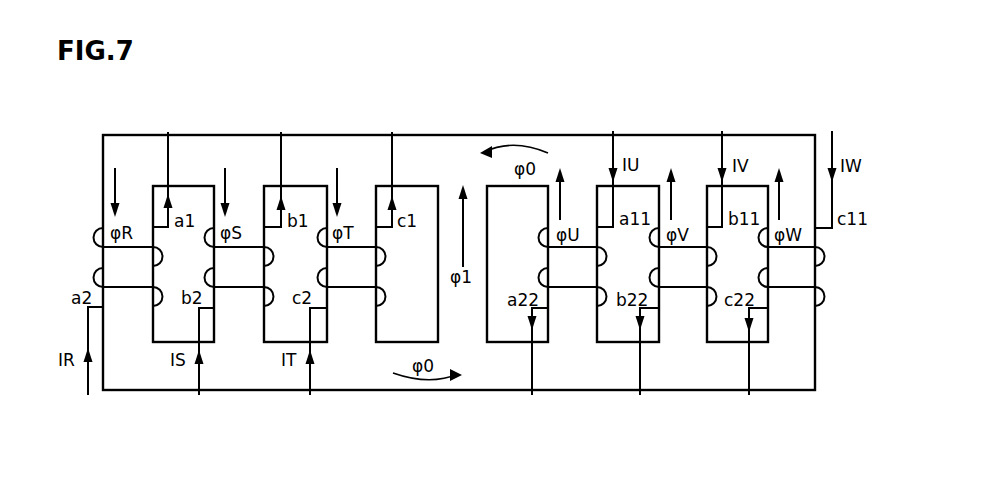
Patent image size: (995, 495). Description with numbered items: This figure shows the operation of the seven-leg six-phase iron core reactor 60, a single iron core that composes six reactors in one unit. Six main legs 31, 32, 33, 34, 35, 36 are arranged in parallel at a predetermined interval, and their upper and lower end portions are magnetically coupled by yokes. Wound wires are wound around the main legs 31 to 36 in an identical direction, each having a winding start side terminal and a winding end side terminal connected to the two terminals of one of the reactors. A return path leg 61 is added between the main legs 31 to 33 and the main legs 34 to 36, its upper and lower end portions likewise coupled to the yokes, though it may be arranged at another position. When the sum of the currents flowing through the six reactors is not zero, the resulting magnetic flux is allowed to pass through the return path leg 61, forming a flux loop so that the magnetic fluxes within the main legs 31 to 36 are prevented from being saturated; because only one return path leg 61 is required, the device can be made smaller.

The seven-leg six-phase iron core reactor 60 is at (101, 131).
The main leg 31 is at (130, 318).
The main leg 32 is at (242, 318).
The main leg 33 is at (352, 318).
The main leg 34 is at (572, 320).
The main leg 35 is at (682, 320).
The main leg 36 is at (794, 320).
The return path leg 61 is at (468, 320).